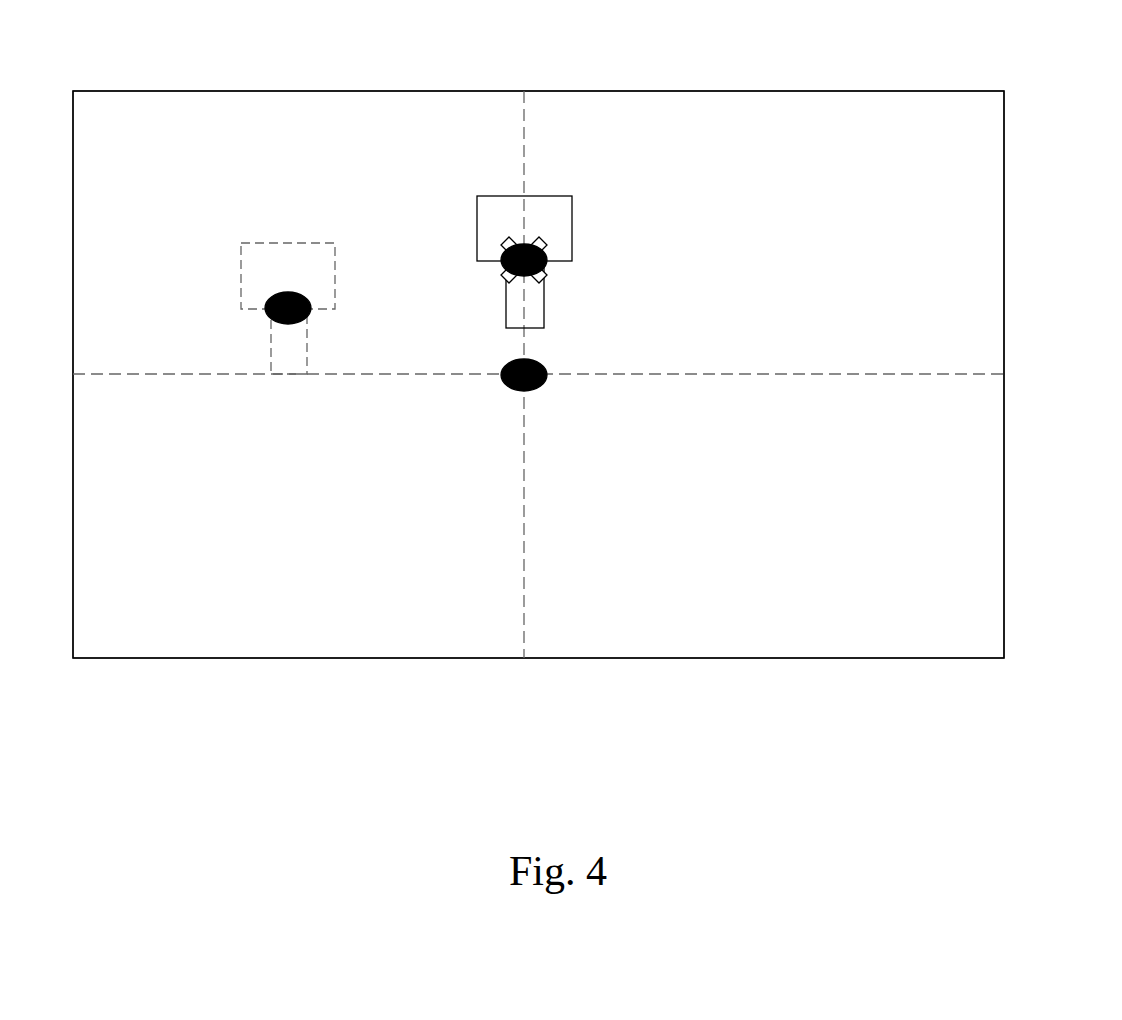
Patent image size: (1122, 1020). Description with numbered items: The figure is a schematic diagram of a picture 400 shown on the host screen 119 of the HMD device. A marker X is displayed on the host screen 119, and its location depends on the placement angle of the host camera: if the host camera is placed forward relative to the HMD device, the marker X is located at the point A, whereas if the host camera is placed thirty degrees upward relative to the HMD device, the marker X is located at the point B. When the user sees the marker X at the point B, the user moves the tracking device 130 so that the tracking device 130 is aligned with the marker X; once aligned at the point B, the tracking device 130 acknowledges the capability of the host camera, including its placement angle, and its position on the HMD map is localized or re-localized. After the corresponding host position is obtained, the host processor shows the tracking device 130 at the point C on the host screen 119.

The picture 400 is at (1097, 53).
The host screen 119 is at (1005, 471).
The tracking device 130 is at (572, 232).
The marker X is at (504, 244).
The point A is at (539, 393).
The point B is at (546, 278).
The point C is at (272, 296).